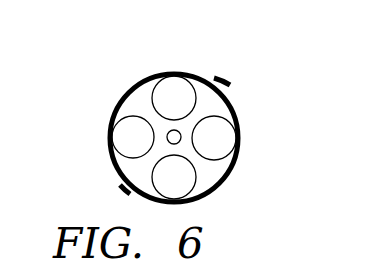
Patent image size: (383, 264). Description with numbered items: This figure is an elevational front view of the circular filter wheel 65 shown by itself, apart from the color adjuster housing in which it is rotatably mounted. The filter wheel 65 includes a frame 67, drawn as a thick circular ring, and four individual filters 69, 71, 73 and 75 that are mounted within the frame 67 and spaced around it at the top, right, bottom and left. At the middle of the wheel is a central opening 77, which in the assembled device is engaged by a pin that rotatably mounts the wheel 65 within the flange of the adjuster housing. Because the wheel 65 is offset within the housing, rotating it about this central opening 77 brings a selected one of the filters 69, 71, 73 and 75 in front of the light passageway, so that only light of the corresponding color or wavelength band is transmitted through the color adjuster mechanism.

The circular filter wheel 65 is at (137, 76).
The frame 67 is at (212, 97).
The filter 69 is at (179, 81).
The filter 71 is at (227, 137).
The filter 73 is at (178, 188).
The filter 75 is at (117, 137).
The central opening 77 is at (128, 192).